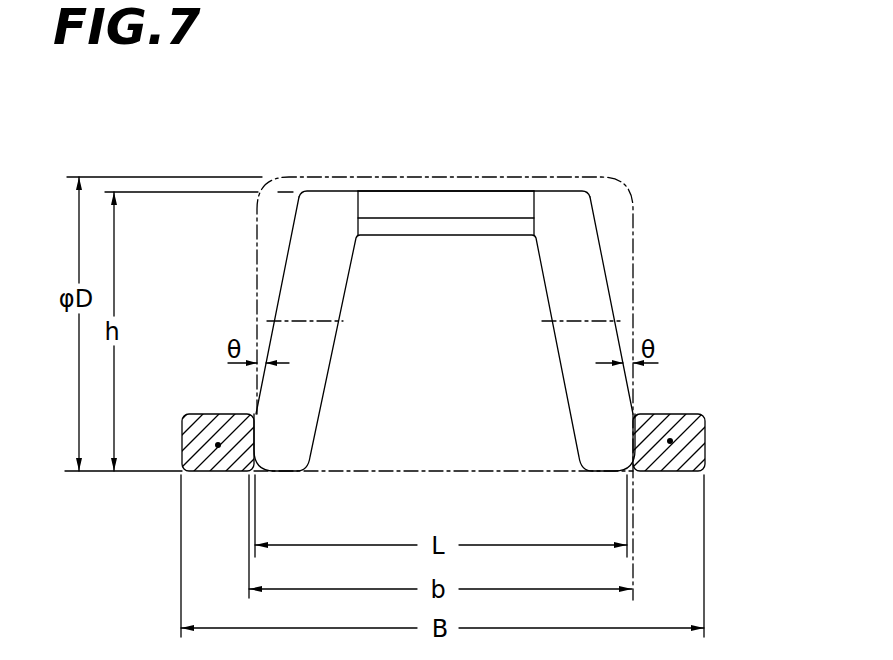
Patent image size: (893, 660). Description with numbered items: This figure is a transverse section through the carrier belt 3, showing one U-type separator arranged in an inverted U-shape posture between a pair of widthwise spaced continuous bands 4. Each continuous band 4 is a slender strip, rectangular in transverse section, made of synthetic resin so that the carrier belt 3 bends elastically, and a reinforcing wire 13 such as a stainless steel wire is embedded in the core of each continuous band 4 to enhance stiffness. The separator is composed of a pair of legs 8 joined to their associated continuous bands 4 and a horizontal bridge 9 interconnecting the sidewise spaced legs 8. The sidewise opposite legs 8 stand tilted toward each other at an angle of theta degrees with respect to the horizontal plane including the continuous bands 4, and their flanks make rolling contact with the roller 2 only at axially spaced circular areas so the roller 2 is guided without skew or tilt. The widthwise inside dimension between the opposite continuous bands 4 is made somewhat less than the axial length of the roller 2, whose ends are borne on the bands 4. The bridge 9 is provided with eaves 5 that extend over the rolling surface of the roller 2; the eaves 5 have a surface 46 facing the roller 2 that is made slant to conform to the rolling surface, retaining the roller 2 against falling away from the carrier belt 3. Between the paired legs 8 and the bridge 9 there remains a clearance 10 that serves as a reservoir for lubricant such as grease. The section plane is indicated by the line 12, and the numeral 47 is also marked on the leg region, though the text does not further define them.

The roller 2 is at (345, 176).
The carrier belt 3 is at (638, 170).
The continuous band 4 is at (197, 418).
The eaves 5 is at (412, 200).
The leg 8 is at (305, 263).
The horizontal bridge 9 is at (482, 205).
The clearance 10 is at (442, 400).
The section line 12 is at (322, 322).
The reinforcing wire 13 is at (218, 445).
The surface 46 is at (440, 228).
The inner leg surface 47 is at (304, 288).